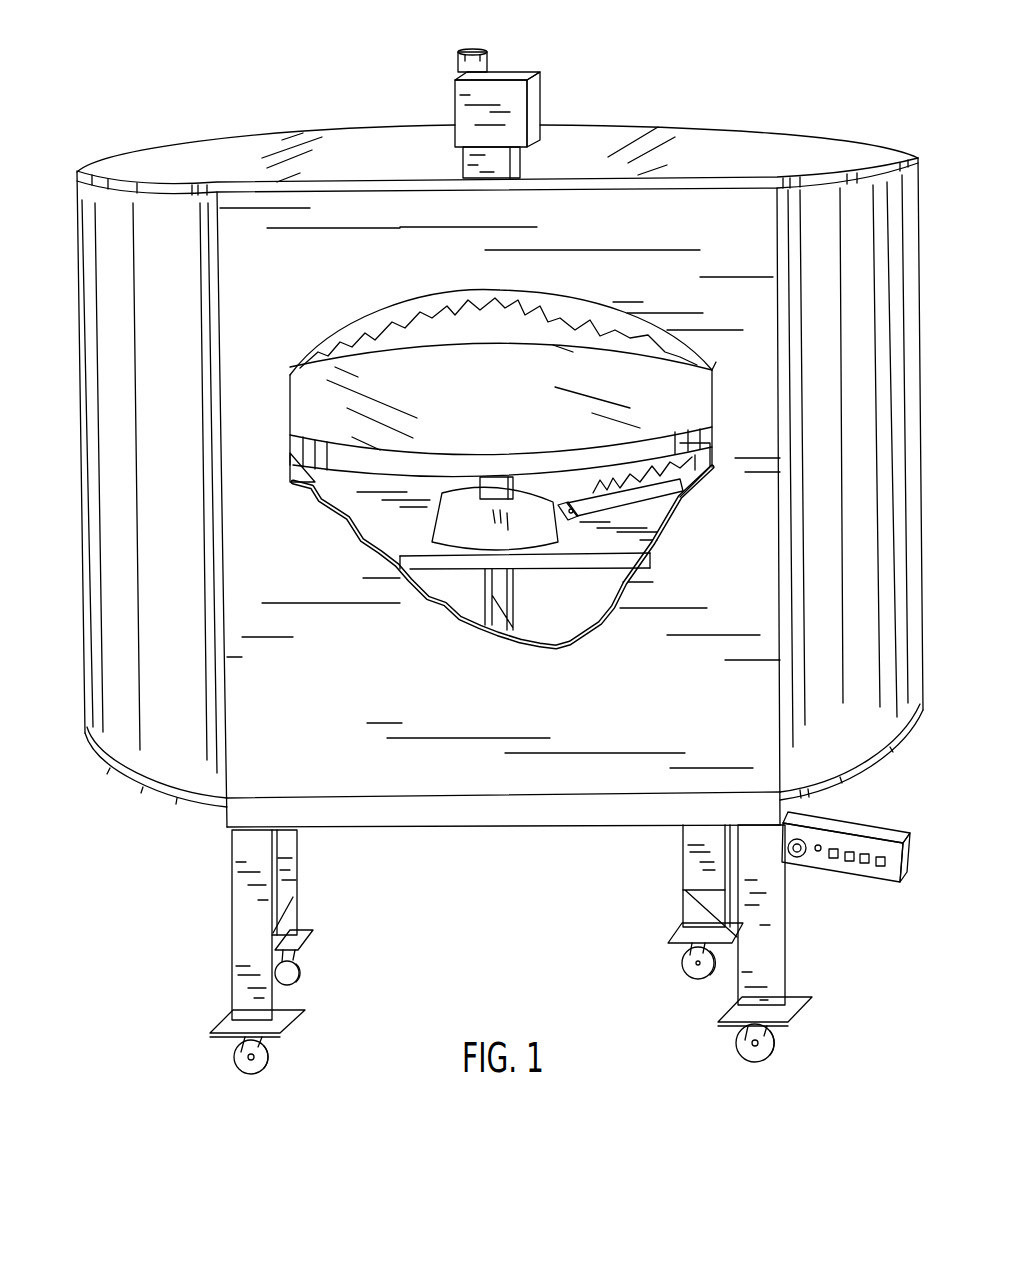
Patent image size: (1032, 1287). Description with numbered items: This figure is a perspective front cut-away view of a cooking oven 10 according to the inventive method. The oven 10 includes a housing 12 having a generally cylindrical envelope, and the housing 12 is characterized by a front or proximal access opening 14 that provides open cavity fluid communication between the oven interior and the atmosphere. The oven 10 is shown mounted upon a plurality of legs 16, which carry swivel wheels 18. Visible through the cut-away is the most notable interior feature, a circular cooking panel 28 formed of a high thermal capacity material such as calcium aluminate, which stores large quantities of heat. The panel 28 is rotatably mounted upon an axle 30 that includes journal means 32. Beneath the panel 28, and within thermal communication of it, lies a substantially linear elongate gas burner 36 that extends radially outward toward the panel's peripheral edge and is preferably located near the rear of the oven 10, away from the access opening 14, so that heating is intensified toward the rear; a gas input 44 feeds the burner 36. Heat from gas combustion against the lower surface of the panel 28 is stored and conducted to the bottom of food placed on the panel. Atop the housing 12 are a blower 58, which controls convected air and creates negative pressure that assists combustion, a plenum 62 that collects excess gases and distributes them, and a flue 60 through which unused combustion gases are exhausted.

The cooking oven 10 is at (172, 903).
The housing 12 is at (105, 462).
The front access opening 14 is at (706, 380).
The legs 16 is at (290, 877).
The swivel wheels 18 is at (277, 1055).
The cooking panel 28 is at (470, 420).
The axle 30 is at (487, 583).
The journal means 32 is at (480, 583).
The gas burner 36 is at (682, 495).
The gas input 44 is at (577, 517).
The blower 58 is at (528, 153).
The flue 60 is at (492, 52).
The plenum 62 is at (535, 80).